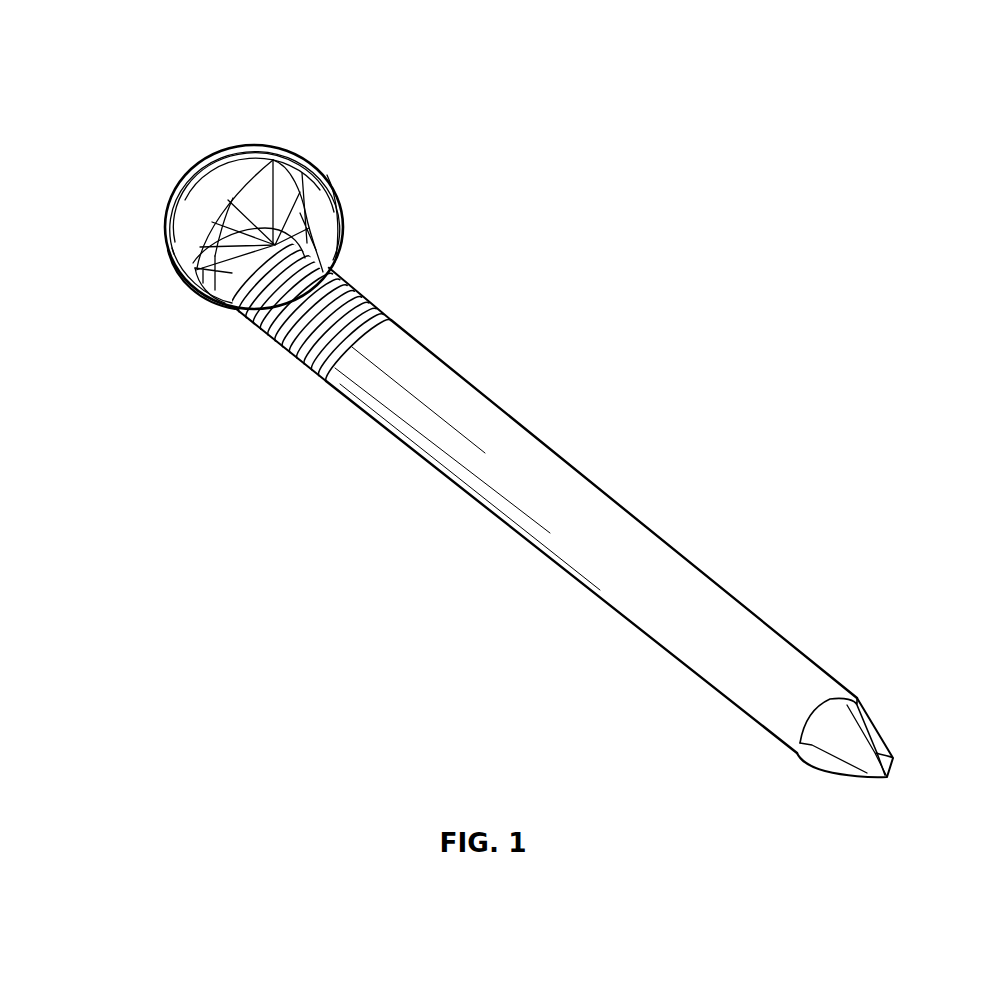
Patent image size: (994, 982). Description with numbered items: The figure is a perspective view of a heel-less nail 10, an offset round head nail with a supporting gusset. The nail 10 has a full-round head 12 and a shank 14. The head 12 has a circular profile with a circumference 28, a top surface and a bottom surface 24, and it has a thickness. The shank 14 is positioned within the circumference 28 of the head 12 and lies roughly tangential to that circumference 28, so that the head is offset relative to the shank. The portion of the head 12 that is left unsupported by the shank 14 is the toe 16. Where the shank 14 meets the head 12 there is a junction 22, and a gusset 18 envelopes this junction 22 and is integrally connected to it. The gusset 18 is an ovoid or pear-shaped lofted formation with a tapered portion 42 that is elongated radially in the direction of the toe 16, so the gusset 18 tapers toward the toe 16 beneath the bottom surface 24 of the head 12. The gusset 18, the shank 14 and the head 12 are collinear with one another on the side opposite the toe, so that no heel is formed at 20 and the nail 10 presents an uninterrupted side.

The heel-less nail 10 is at (127, 52).
The head 12 is at (313, 176).
The shank 14 is at (447, 387).
The toe 16 is at (263, 148).
The gusset 18 is at (193, 272).
The heel 20 is at (230, 305).
The junction 22 is at (236, 219).
The bottom surface 24 is at (217, 221).
The circumference 28 is at (345, 202).
The tapered portion 42 is at (265, 182).